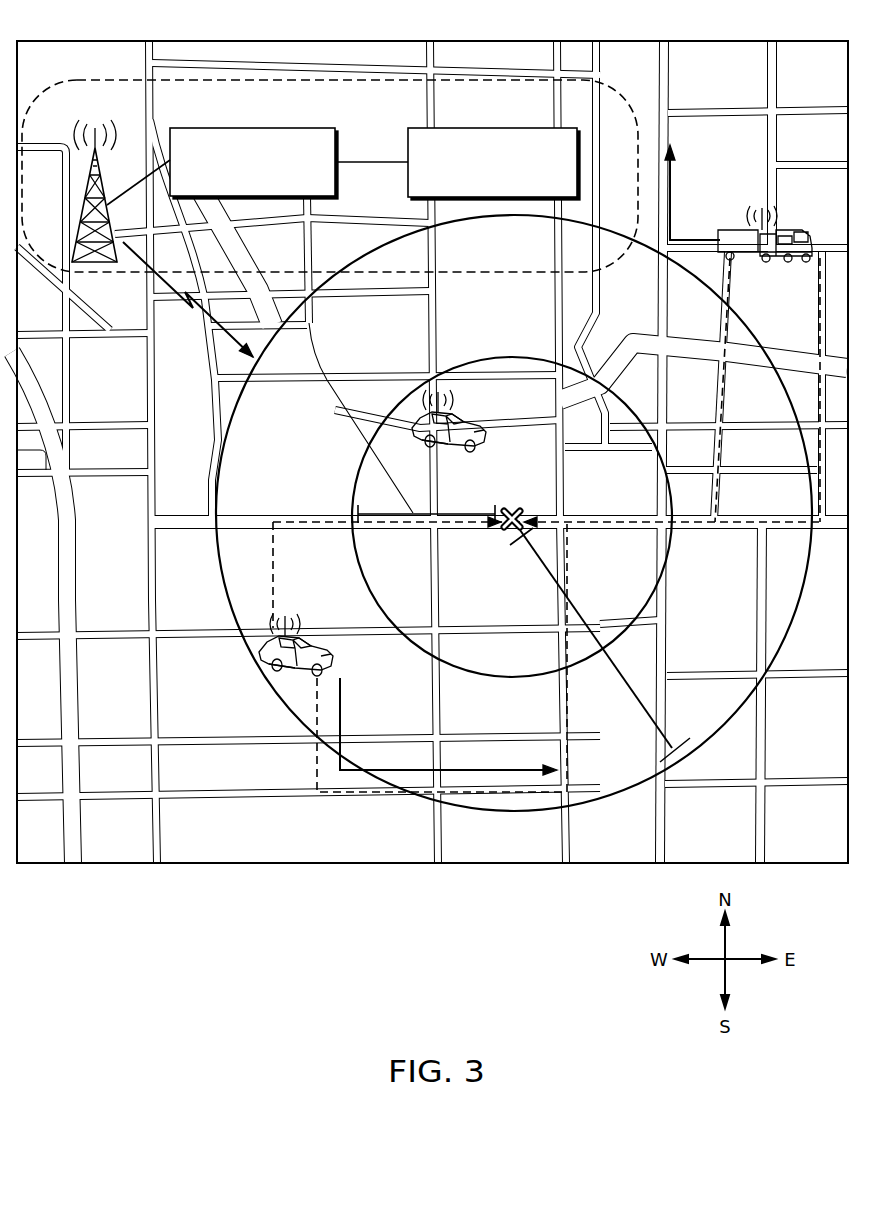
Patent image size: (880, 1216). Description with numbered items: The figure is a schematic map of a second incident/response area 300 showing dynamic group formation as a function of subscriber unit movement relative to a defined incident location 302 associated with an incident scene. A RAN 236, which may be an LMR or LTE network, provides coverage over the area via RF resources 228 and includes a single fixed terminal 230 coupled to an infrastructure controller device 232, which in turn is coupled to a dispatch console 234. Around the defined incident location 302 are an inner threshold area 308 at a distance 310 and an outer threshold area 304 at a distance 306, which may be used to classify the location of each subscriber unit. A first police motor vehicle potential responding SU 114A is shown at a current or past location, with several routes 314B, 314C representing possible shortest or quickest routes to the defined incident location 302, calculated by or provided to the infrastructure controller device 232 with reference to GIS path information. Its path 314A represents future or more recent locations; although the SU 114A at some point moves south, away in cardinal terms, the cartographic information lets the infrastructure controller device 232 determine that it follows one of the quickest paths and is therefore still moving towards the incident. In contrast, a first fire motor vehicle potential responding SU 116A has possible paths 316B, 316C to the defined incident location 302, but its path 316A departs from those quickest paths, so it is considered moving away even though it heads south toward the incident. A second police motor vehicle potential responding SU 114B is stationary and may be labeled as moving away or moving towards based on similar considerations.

The second incident/response area 300 is at (719, 17).
The fixed terminal 230 is at (80, 211).
The infrastructure controller device 232 is at (252, 128).
The dispatch console 234 is at (492, 128).
The RAN 236 is at (497, 274).
The RF resources 228 is at (210, 320).
The defined incident location 302 is at (523, 511).
The outer threshold area 304 is at (748, 700).
The distance of outer threshold area 306 is at (648, 710).
The inner threshold area 308 is at (415, 390).
The distance of inner threshold area 310 is at (430, 512).
The first police motor vehicle potential responding SU 114A is at (318, 641).
The second police motor vehicle potential responding SU 114B is at (473, 448).
The first fire motor vehicle potential responding SU 116A is at (805, 225).
The path 314A is at (477, 767).
The route 314B is at (275, 520).
The route 314C is at (570, 745).
The path 316A is at (706, 240).
The path 316B is at (722, 322).
The path 316C is at (820, 325).